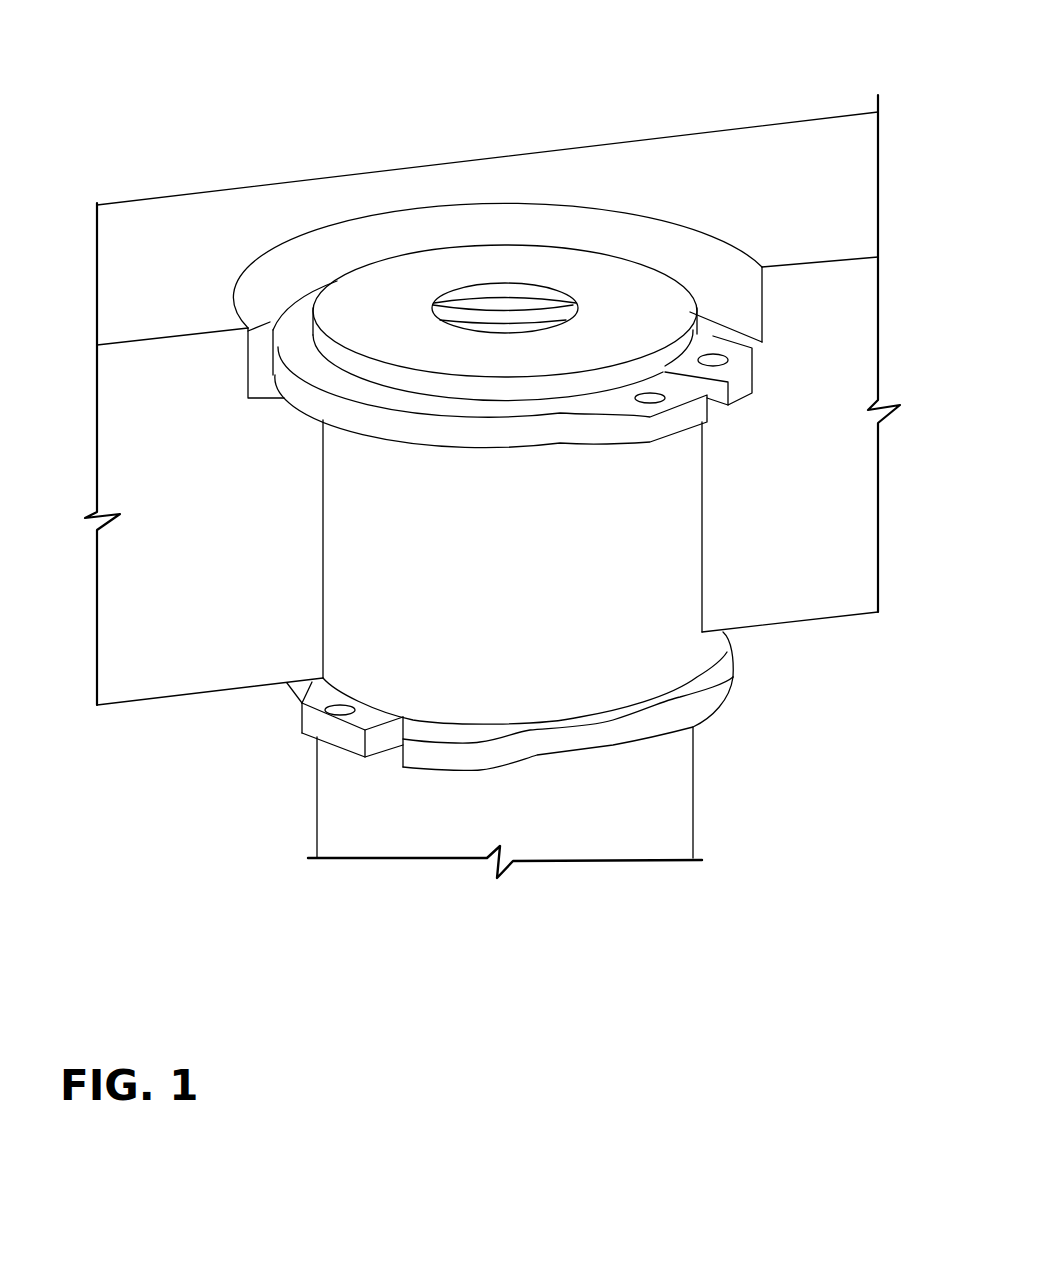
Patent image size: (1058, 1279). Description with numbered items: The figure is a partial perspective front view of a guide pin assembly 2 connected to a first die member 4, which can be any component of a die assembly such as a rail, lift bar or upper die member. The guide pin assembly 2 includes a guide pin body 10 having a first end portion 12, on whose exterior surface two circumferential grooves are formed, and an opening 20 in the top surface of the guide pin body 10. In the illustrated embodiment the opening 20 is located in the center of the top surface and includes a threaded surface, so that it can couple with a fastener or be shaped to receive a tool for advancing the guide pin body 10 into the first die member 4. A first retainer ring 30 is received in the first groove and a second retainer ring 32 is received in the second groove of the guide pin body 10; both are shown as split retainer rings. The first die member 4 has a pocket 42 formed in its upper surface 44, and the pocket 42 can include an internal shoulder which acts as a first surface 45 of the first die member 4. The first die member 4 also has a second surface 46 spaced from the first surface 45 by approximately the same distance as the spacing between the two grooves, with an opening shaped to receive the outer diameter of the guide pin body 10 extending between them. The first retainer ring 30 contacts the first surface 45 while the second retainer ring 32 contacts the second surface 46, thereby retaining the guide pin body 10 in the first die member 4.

The guide pin assembly 2 is at (371, 294).
The first die member 4 is at (823, 363).
The guide pin body 10 is at (360, 810).
The first end portion 12 is at (357, 538).
The opening 20 is at (505, 316).
The first retainer ring 30 is at (700, 343).
The second retainer ring 32 is at (707, 686).
The pocket 42 is at (287, 287).
The upper surface 44 is at (137, 237).
The first surface 45 is at (263, 385).
The second surface 46 is at (827, 620).